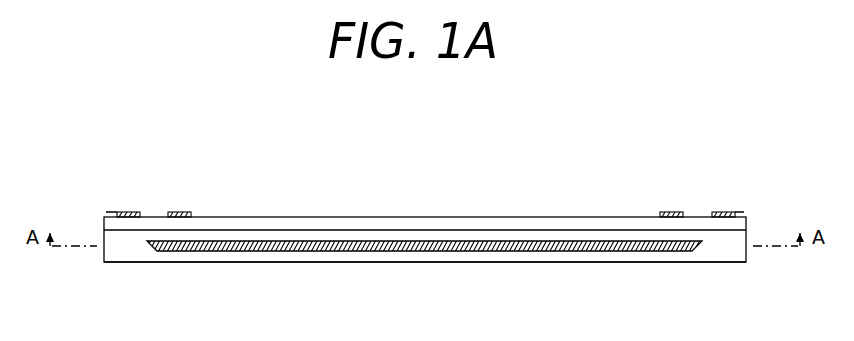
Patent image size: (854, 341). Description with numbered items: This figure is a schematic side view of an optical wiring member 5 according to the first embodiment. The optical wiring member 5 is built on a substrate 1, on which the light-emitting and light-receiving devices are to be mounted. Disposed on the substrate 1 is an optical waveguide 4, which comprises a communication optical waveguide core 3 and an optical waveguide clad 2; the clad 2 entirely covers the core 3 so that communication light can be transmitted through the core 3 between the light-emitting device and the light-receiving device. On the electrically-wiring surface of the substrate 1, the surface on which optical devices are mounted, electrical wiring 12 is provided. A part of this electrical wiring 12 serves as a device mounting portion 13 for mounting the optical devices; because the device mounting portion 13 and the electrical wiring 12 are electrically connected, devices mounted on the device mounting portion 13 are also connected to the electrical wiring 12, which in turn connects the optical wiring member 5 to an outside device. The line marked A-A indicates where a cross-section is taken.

The substrate 1 is at (489, 216).
The optical waveguide clad 2 is at (437, 229).
The communication optical waveguide core 3 is at (385, 240).
The optical waveguide 4 is at (316, 266).
The optical wiring member 5 is at (94, 216).
The electrical wiring 12 is at (109, 211).
The device mounting portion 13 is at (176, 211).